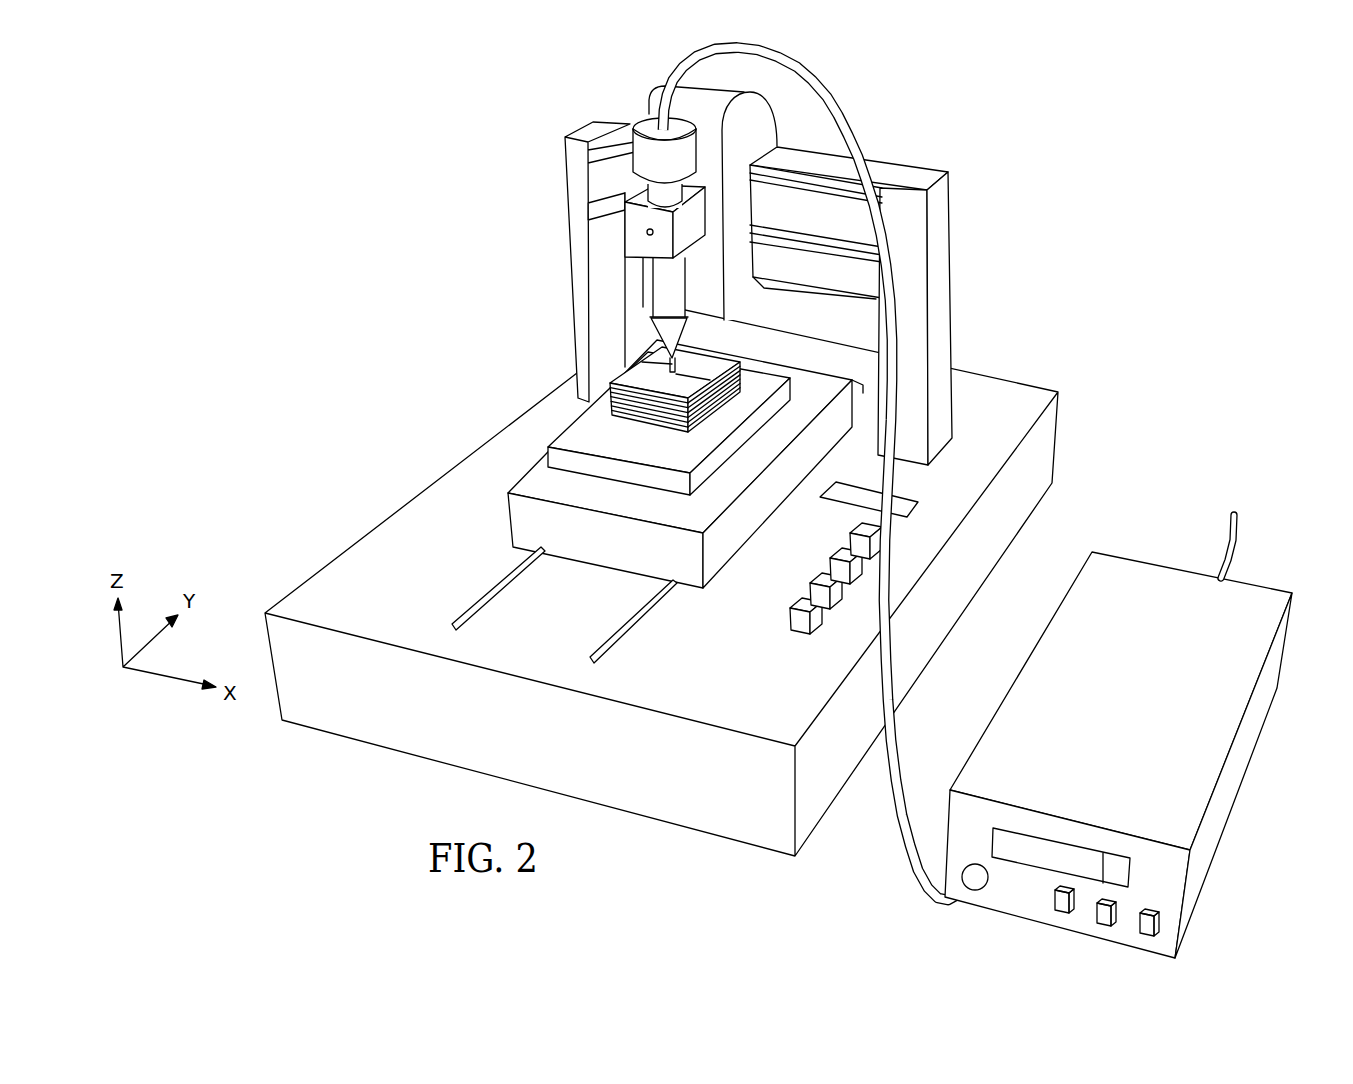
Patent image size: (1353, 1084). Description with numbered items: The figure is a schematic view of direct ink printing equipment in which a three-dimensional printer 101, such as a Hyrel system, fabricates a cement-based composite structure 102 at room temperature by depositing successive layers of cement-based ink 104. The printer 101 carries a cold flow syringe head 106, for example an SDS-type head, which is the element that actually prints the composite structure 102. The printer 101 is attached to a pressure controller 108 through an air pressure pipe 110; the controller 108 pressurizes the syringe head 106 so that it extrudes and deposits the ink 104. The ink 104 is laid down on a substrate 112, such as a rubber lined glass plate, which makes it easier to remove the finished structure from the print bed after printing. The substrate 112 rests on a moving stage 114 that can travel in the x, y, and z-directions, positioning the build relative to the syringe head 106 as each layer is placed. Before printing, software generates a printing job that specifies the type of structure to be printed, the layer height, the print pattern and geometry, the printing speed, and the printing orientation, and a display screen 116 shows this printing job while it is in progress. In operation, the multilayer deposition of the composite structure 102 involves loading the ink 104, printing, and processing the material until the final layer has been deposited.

The 3D printer 101 is at (778, 503).
The cement-based composite structure 102 is at (763, 370).
The cement-based ink 104 is at (680, 370).
The cold flow syringe head 106 is at (623, 285).
The pressure controller 108 is at (1153, 562).
The air pressure pipe 110 is at (900, 732).
The substrate 112 is at (573, 425).
The moving stage 114 is at (508, 517).
The display screen 116 is at (905, 508).